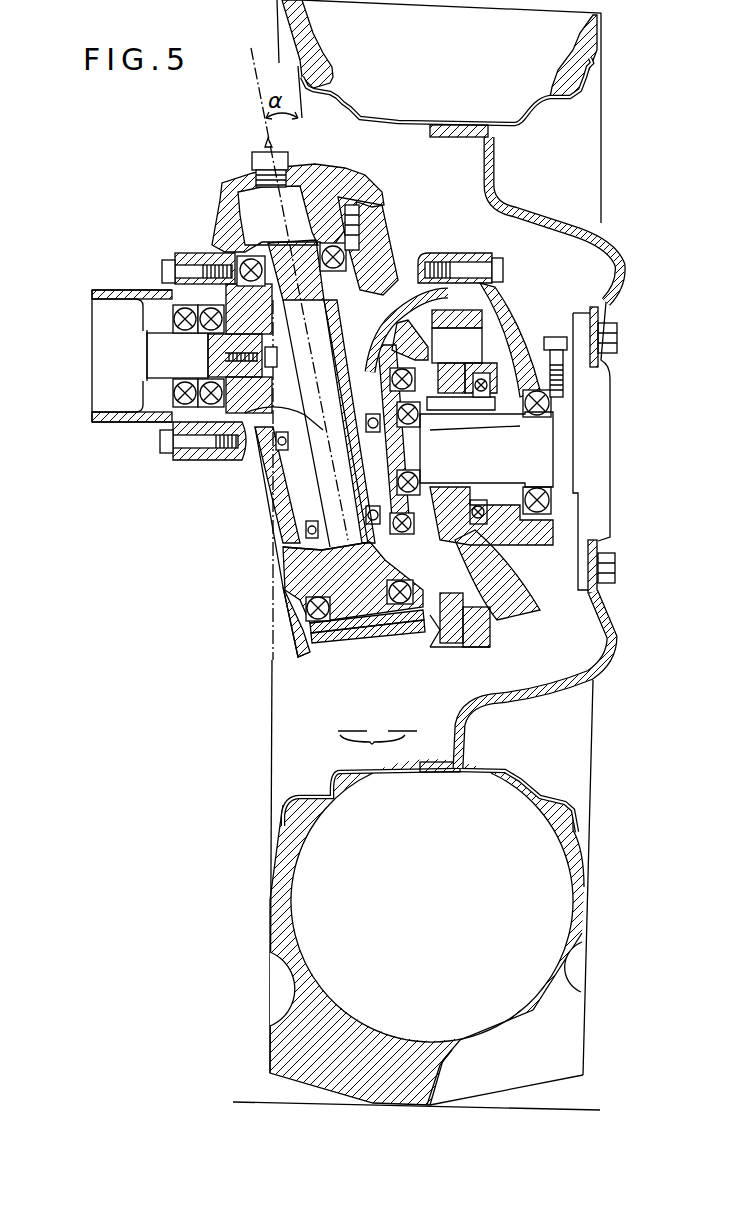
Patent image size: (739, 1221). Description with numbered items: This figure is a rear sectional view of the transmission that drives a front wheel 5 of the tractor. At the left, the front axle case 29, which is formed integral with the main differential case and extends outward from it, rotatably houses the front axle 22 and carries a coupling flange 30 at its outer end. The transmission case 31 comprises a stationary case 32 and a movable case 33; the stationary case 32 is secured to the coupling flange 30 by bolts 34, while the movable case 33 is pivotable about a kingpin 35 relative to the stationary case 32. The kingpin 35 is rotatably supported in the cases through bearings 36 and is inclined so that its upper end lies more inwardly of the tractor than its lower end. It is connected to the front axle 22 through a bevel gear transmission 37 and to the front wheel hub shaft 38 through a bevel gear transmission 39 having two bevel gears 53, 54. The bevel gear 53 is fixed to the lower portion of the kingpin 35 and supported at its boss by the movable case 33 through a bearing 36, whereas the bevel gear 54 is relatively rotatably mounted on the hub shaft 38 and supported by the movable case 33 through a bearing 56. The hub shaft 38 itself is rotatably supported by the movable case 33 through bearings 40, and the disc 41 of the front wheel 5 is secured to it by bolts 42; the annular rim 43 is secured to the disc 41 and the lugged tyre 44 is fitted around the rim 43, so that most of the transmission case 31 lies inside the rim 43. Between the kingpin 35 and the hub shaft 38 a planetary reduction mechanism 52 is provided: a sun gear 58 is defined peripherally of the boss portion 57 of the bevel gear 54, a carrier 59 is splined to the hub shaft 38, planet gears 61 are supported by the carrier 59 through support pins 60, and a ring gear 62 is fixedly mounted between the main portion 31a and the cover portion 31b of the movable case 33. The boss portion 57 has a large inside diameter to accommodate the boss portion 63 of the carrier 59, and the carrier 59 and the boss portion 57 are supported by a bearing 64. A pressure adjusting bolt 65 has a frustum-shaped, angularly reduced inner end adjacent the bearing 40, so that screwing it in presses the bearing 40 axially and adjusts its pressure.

The front wheel 5 is at (262, 882).
The front axle 22 is at (118, 363).
The front axle case 29 is at (113, 290).
The coupling flange 30 is at (183, 462).
The transmission case 31 is at (287, 635).
The main portion 31a is at (433, 637).
The cover portion 31b is at (605, 665).
The stationary case 32 is at (240, 237).
The movable case 33 is at (293, 552).
The bolt 34 is at (160, 267).
The kingpin 35 is at (323, 430).
The bearing 36 is at (380, 203).
The bevel gear transmission 37 is at (337, 308).
The front wheel hub shaft 38 is at (593, 488).
The bevel gear transmission 39 is at (377, 746).
The bearing 40 is at (547, 403).
The disc 41 is at (523, 203).
The bolt 42 is at (613, 338).
The annular rim 43 is at (510, 770).
The tyre 44 is at (577, 897).
The planetary reduction mechanism 52 is at (475, 320).
The bevel gear 53 is at (343, 640).
The bevel gear 54 is at (407, 643).
The bearing 56 is at (370, 623).
The boss portion 57 is at (480, 520).
The sun gear 58 is at (490, 600).
The carrier 59 is at (500, 603).
The support pin 60 is at (480, 337).
The planet gear 61 is at (470, 300).
The ring gear 62 is at (455, 300).
The boss portion 63 is at (490, 427).
The bearing 64 is at (503, 363).
The pressure adjusting bolt 65 is at (567, 340).